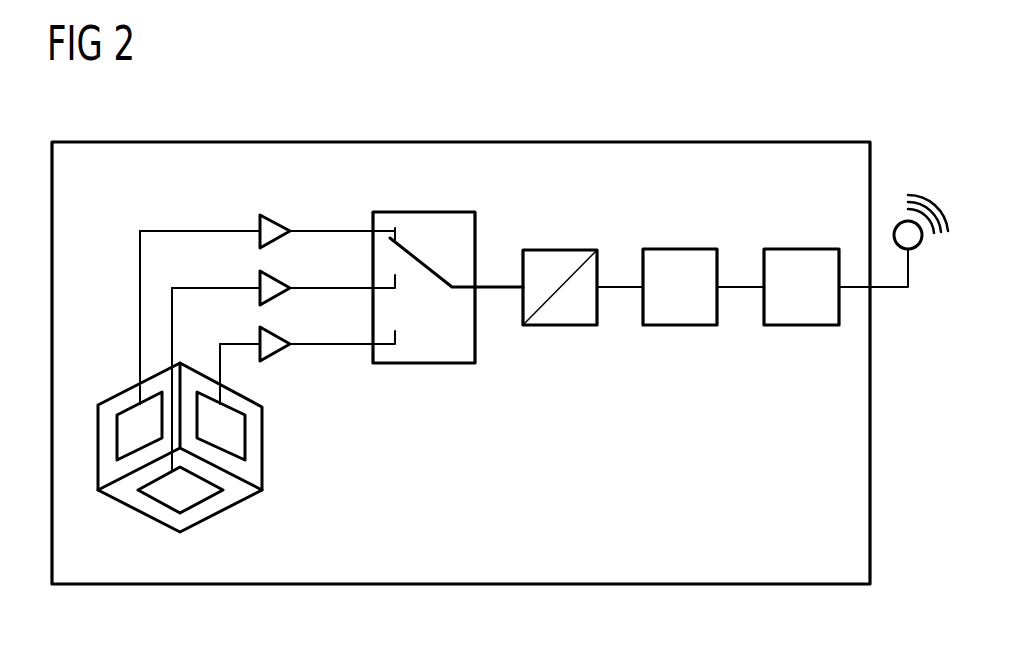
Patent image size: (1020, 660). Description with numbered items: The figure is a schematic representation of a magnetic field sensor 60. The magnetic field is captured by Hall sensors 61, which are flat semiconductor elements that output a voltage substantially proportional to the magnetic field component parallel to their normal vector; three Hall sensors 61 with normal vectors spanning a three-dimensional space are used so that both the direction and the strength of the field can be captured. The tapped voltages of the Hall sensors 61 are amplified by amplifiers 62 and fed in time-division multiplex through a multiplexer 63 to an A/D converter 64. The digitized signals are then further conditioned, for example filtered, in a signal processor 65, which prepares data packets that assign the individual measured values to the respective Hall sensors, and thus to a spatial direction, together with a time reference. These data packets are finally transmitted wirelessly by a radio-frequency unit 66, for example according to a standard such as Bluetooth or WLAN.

The magnetic field sensor 60 is at (463, 139).
The Hall sensors 61 is at (127, 407).
The amplifiers 62 is at (279, 214).
The multiplexer 63 is at (425, 366).
The A/D converter 64 is at (558, 248).
The signal processor 65 is at (678, 248).
The radio-frequency unit 66 is at (803, 248).